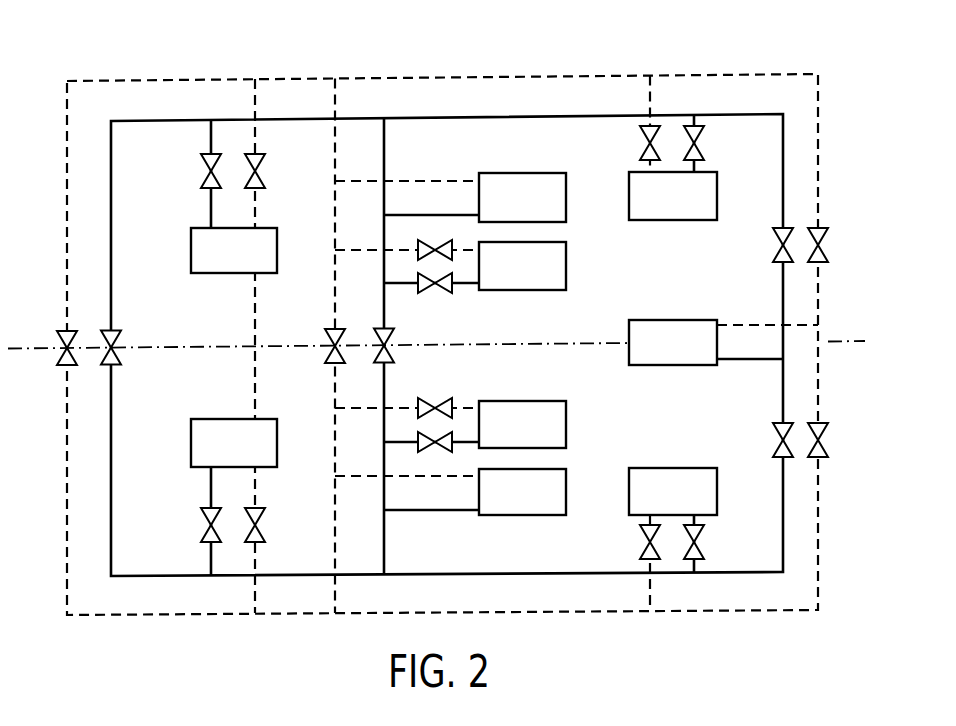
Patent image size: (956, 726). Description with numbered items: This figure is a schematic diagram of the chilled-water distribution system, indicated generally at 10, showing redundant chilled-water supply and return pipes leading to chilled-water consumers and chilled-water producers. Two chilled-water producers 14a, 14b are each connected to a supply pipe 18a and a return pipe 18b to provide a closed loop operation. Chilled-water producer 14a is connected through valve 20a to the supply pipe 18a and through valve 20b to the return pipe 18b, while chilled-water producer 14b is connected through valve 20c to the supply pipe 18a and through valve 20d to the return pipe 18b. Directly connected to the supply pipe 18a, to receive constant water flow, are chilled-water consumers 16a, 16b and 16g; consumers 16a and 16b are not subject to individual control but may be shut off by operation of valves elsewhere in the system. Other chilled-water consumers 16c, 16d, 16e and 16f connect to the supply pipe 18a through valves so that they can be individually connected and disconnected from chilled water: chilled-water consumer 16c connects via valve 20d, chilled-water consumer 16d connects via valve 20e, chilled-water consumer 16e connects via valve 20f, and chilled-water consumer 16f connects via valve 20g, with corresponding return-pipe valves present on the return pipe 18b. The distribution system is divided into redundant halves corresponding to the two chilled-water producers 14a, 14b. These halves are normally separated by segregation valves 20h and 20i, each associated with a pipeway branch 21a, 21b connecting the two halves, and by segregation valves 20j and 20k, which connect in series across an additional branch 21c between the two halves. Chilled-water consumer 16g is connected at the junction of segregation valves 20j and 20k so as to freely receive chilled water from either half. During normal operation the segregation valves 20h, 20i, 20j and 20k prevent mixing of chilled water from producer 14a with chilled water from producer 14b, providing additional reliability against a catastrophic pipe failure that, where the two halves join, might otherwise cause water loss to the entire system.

The fluid distribution system 10 is at (685, 56).
The chilled-water producer 14a is at (252, 263).
The chilled-water producer 14b is at (252, 456).
The chilled-water consumer 16a is at (540, 210).
The chilled-water consumer 16b is at (540, 505).
The chilled-water consumer 16c is at (540, 279).
The chilled-water consumer 16d is at (540, 437).
The chilled-water consumer 16e is at (691, 209).
The chilled-water consumer 16f is at (689, 504).
The chilled-water consumer 16g is at (691, 355).
The supply pipe 18a is at (417, 116).
The return pipe 18b is at (290, 78).
The valve 20a is at (202, 163).
The valve 20b is at (264, 163).
The valve 20c is at (207, 517).
The valve 20d is at (263, 517).
The valve 20e is at (447, 402).
The valve 20f is at (640, 143).
The valve 20g is at (640, 540).
The segregation valve 20h is at (119, 341).
The segregation valve 20i is at (392, 338).
The segregation valve 20j is at (776, 248).
The segregation valve 20k is at (776, 443).
The pipeway branch 21a is at (94, 301).
The pipeway branch 21b is at (351, 321).
The additional branch 21c is at (790, 302).